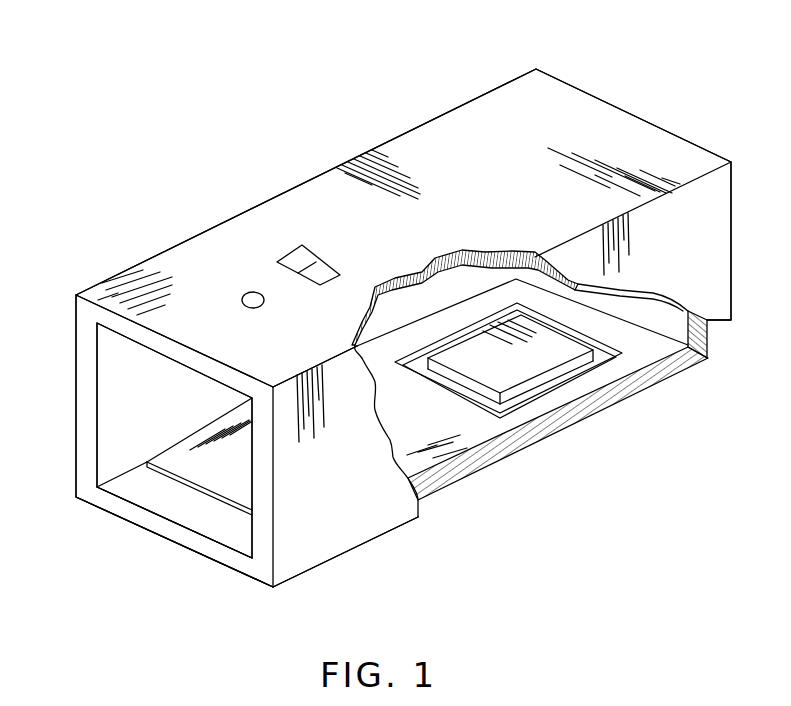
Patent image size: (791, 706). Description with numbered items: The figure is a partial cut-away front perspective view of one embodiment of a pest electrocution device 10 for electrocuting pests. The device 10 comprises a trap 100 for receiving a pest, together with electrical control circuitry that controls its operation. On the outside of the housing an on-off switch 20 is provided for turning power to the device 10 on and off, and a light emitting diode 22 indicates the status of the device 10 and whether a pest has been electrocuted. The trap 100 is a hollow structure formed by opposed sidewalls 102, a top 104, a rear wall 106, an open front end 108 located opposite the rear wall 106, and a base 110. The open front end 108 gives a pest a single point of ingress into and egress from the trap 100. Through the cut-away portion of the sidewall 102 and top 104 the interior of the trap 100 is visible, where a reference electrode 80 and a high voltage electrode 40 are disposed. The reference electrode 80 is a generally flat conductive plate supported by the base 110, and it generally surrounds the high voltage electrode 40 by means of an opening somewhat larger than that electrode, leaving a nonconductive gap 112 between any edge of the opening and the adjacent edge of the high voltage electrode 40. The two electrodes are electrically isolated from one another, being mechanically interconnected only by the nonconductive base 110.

The pest electrocution device 10 is at (345, 97).
The on-off switch 20 is at (295, 257).
The light emitting diode 22 is at (252, 292).
The high voltage electrode 40 is at (481, 370).
The reference electrode 80 is at (576, 387).
The trap 100 is at (109, 378).
The sidewalls 102 is at (85, 452).
The top 104 is at (501, 122).
The rear wall 106 is at (709, 330).
The open front end 108 is at (182, 507).
The base 110 is at (654, 382).
The nonconductive gap 112 is at (523, 395).